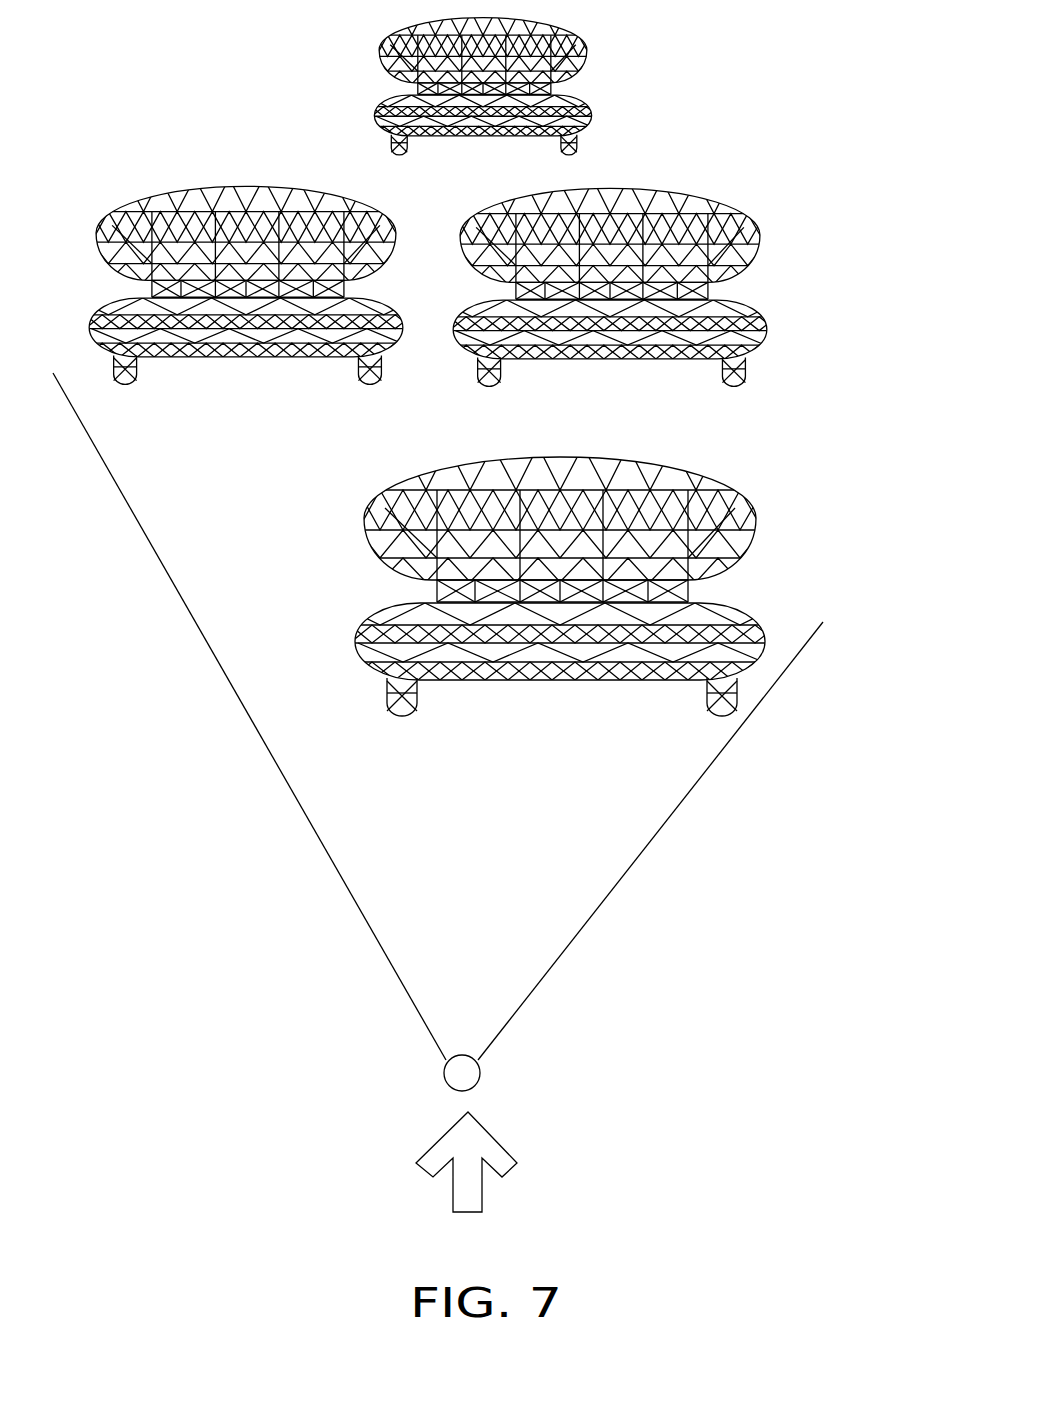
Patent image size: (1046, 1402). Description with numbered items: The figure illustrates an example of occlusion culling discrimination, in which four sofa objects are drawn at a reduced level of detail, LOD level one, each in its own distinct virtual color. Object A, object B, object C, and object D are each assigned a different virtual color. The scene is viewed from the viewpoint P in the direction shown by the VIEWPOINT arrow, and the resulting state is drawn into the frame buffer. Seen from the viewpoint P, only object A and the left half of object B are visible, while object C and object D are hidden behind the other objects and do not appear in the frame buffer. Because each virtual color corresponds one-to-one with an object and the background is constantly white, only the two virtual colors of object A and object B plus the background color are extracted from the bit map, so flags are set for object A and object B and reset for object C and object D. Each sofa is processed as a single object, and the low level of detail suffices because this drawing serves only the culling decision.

The object A is at (560, 604).
The object B is at (246, 301).
The object C is at (610, 302).
The object D is at (638, 83).
The viewpoint P is at (475, 1073).
The viewpoint arrow VIEWPOINT is at (470, 1180).